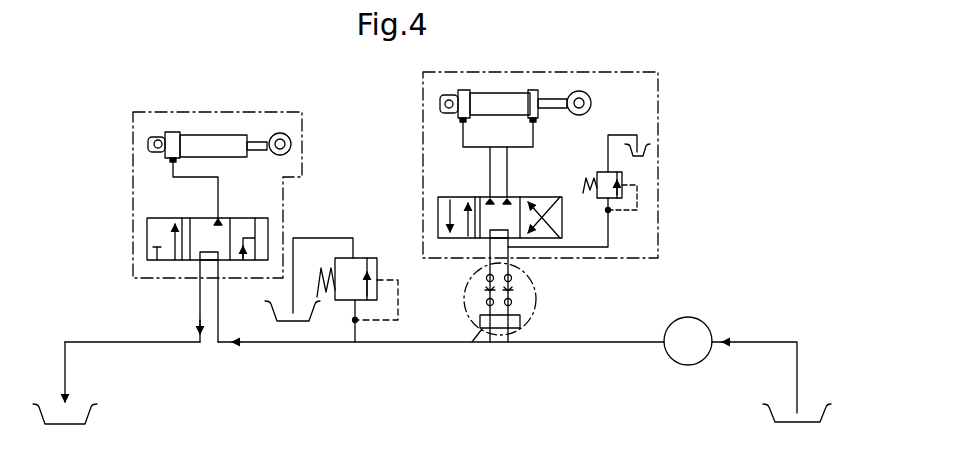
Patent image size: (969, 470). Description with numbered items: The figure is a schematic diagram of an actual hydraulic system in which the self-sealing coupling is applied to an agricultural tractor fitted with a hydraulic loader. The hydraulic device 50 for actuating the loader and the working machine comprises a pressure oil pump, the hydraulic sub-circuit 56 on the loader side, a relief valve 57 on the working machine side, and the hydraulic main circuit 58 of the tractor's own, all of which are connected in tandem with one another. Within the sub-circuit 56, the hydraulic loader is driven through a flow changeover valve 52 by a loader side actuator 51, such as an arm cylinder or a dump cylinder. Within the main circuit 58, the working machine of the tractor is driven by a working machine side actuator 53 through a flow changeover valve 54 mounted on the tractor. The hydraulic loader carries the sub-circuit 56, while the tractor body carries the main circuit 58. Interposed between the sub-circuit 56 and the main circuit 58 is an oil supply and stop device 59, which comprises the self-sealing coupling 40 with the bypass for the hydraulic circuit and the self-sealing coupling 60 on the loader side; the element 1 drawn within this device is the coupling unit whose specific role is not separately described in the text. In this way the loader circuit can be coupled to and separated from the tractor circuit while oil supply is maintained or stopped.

The pressure compensating valve 1 is at (522, 320).
The self-sealing coupling with the bypass for the hydraulic circuit 40 is at (482, 329).
The hydraulic device 50 is at (431, 351).
The loader side actuator 51 is at (498, 92).
The flow changeover valve 52 is at (536, 197).
The working machine side actuator 53 is at (205, 133).
The flow changeover valve 54 is at (183, 217).
The hydraulic sub-circuit 56 is at (658, 108).
The relief valve 57 is at (358, 257).
The hydraulic main circuit 58 is at (277, 110).
The oil supply and stop device 59 is at (463, 303).
The self-sealing coupling on the loader side 60 is at (512, 265).